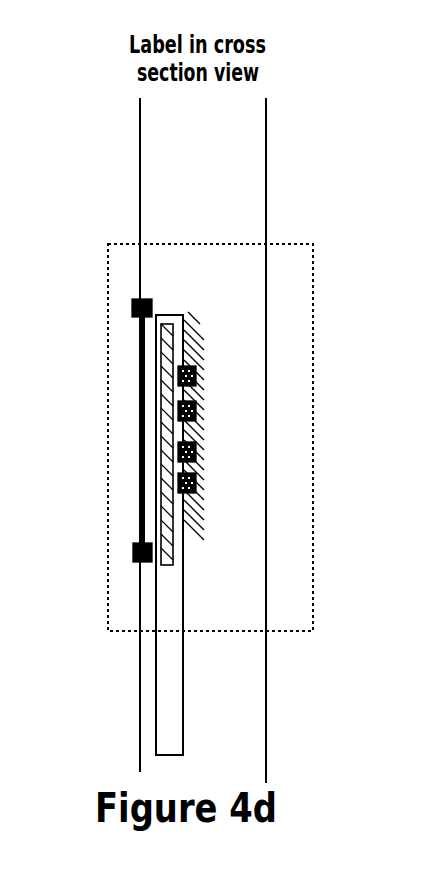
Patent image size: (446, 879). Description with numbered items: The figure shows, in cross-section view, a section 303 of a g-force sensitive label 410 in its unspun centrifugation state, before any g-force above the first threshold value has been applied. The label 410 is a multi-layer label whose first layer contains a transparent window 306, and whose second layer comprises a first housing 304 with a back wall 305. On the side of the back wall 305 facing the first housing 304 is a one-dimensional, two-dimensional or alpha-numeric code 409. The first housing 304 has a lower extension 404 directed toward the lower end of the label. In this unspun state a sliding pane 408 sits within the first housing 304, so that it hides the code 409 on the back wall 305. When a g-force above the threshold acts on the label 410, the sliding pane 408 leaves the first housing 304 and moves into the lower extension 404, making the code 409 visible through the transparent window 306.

The section 303 is at (108, 631).
The first housing 304 is at (150, 367).
The back wall 305 is at (197, 345).
The transparent window 306 is at (141, 500).
The lower extension 404 is at (170, 672).
The sliding pane 408 is at (163, 330).
The code 409 is at (197, 377).
The g-force sensitive label 410 is at (226, 146).